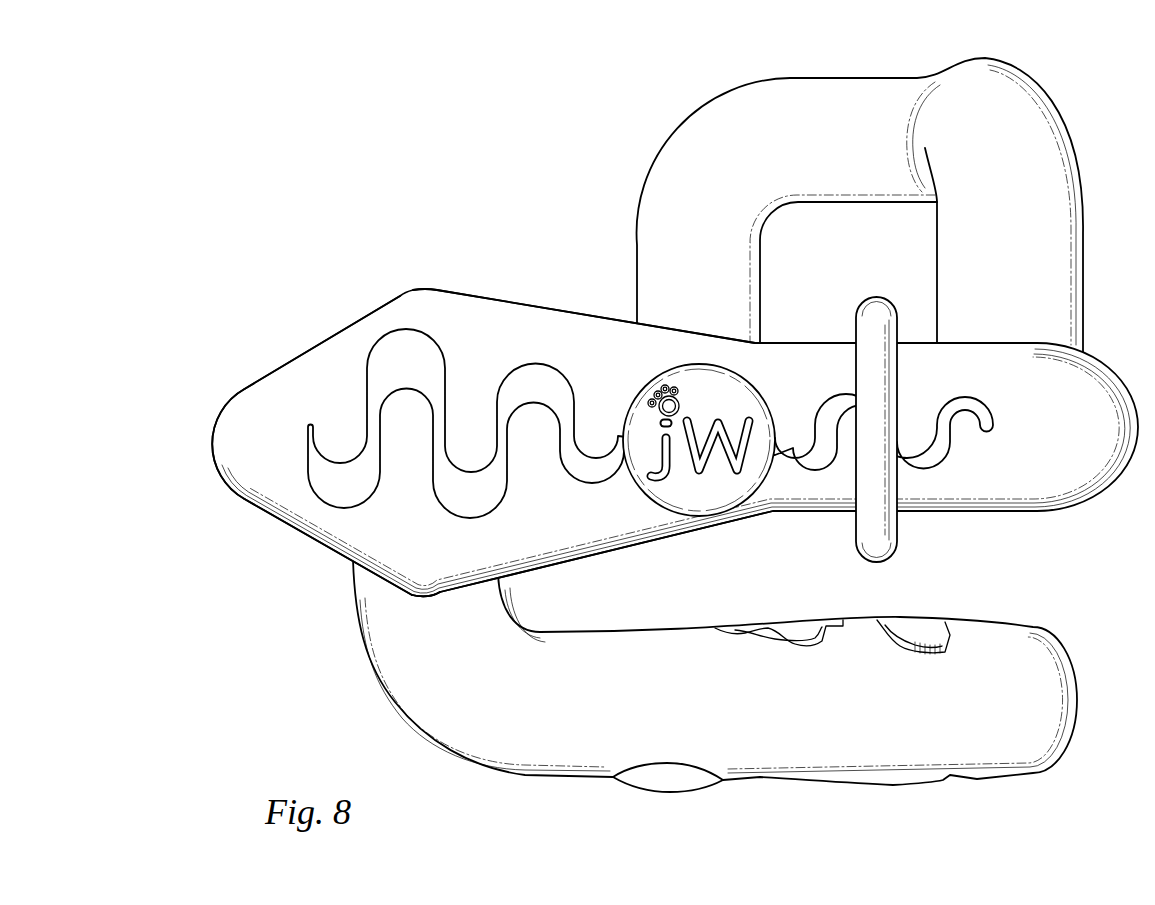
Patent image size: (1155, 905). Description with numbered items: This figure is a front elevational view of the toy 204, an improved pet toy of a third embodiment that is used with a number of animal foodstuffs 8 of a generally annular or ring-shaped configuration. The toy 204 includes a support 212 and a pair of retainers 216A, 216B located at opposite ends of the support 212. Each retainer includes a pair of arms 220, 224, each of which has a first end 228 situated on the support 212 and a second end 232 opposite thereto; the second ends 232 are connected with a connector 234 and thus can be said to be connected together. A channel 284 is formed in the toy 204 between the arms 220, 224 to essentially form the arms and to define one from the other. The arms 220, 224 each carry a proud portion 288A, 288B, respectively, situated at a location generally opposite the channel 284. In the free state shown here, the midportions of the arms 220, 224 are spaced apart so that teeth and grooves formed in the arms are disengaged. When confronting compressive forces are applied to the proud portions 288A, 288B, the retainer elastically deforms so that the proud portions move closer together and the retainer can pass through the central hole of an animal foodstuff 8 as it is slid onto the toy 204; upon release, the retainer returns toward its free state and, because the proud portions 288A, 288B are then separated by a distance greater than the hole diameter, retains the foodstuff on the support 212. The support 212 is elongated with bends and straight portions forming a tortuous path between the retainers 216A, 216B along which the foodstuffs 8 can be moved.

The toy 204 is at (646, 399).
The support 212 is at (828, 77).
The retainer 216A is at (640, 445).
The retainer 216B is at (1050, 627).
The arm 220 is at (640, 446).
The arm 224 is at (331, 552).
The first end 228 is at (630, 325).
The second end 232 is at (303, 347).
The connector 234 is at (213, 447).
The channel 284 is at (420, 340).
The proud portion 288A is at (413, 290).
The proud portion 288B is at (425, 595).
The animal foodstuff 8 is at (895, 527).